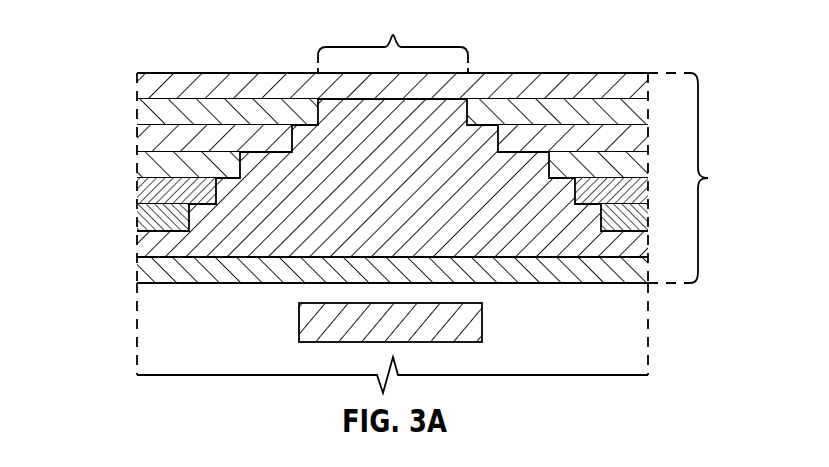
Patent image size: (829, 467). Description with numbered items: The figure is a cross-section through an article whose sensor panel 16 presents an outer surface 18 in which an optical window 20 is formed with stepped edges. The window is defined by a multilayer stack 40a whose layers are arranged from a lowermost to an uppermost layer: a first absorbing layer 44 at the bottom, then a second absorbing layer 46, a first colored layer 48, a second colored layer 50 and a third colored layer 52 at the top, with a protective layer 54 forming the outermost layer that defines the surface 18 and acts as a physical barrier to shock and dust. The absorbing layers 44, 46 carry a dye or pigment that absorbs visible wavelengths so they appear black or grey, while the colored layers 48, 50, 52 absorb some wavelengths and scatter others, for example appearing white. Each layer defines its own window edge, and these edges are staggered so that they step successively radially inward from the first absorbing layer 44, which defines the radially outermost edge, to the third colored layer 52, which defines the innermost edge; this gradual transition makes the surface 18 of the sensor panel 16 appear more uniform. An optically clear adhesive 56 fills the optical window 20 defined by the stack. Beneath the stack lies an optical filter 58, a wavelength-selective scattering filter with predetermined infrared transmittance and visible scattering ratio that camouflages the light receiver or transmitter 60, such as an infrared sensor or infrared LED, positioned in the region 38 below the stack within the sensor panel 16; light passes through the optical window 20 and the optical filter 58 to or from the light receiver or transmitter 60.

The sensor panel 16 is at (136, 357).
The surface 18 is at (190, 73).
The optical window 20 is at (393, 39).
The dielectric layer 38 is at (148, 312).
The multilayer stack 40a is at (702, 178).
The first absorbing layer 44 is at (142, 215).
The second absorbing layer 46 is at (142, 188).
The first colored layer 48 is at (142, 167).
The second colored layer 50 is at (142, 137).
The third colored layer 52 is at (142, 112).
The protective layer 54 is at (145, 82).
The optically clear adhesive 56 is at (407, 204).
The optical filter 58 is at (142, 272).
The light receiver or transmitter 60 is at (299, 320).